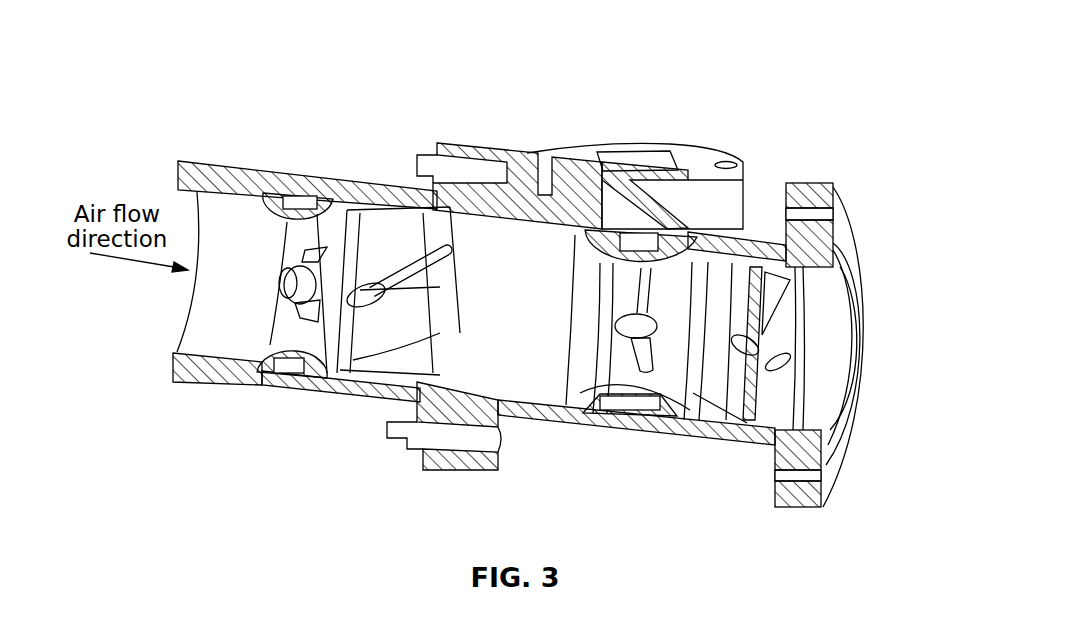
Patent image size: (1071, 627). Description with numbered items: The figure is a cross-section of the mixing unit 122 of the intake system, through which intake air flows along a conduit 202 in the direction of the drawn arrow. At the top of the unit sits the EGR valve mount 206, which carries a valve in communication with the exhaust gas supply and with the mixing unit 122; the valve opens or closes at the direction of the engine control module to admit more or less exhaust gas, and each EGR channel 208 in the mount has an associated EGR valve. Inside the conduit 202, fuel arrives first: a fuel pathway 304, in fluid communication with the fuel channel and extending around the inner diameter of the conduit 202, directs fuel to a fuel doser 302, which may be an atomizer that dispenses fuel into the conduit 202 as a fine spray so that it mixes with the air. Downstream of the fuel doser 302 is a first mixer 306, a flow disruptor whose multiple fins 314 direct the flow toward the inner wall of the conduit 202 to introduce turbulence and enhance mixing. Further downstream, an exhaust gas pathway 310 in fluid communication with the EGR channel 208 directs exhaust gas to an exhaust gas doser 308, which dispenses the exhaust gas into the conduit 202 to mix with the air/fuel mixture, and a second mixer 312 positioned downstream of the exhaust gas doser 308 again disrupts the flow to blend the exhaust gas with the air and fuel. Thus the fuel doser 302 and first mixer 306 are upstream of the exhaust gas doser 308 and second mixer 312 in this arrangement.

The mixing unit 122 is at (822, 100).
The conduit 202 is at (237, 170).
The EGR valve mount 206 is at (573, 150).
The EGR channel 208 is at (650, 160).
The fuel doser 302 is at (282, 286).
The fuel pathway 304 is at (270, 362).
The first mixer 306 is at (346, 325).
The exhaust gas doser 308 is at (617, 332).
The exhaust gas pathway 310 is at (633, 405).
The second mixer 312 is at (698, 372).
The fins 314 is at (433, 213).